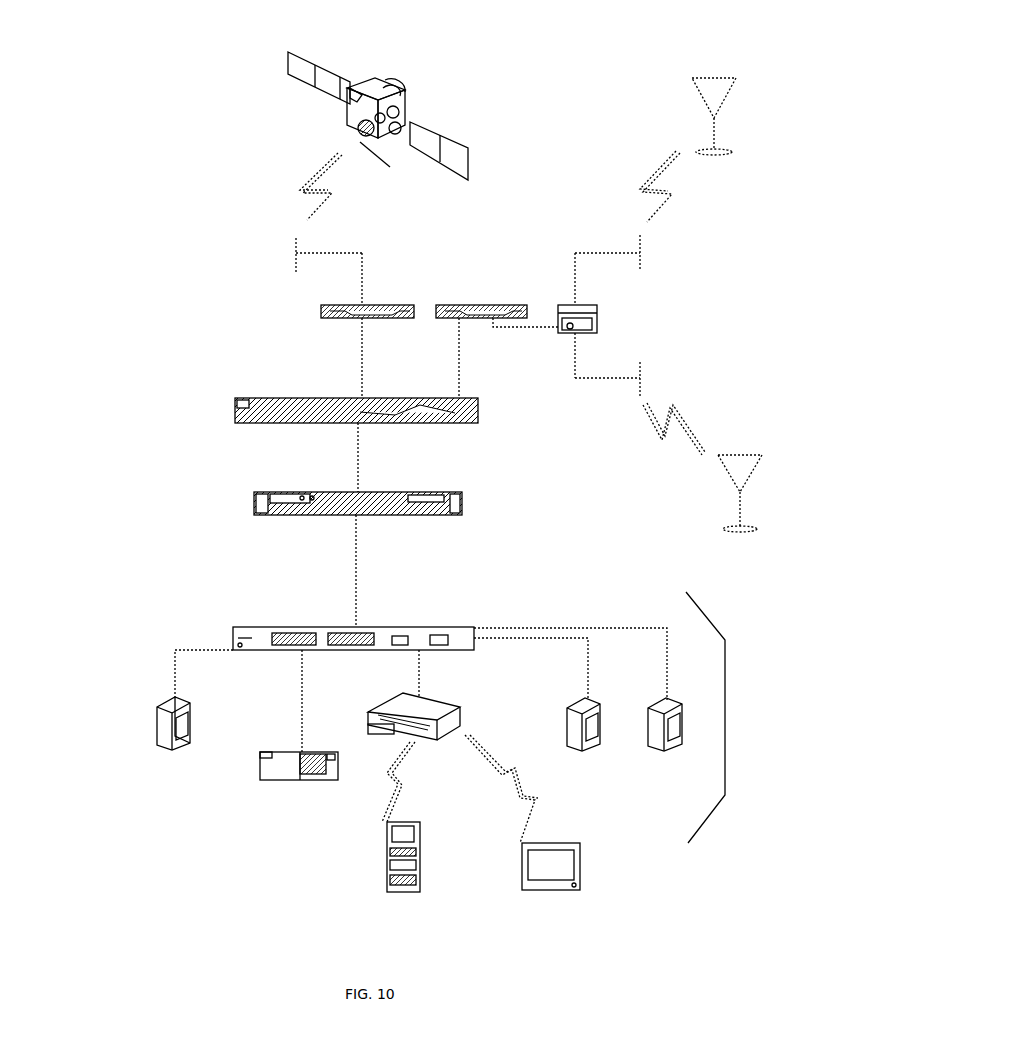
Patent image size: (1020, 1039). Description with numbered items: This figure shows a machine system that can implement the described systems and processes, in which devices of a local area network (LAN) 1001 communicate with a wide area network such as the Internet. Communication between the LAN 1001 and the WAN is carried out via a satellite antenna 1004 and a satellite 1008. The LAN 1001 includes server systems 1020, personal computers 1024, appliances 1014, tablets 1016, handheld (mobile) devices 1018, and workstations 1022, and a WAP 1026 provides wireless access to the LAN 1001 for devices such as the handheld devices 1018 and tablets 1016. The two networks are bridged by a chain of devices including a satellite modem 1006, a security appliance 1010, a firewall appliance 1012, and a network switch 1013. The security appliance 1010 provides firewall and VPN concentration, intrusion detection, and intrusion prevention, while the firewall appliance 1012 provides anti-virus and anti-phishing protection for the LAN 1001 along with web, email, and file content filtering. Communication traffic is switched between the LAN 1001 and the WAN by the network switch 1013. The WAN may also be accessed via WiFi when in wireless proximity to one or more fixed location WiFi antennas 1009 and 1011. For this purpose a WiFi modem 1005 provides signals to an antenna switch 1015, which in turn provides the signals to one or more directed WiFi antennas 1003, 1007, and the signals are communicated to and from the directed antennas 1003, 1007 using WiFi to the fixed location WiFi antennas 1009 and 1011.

The local area network (LAN) 1001 is at (739, 717).
The directed WiFi antenna 1003 is at (691, 257).
The satellite antenna 1004 is at (239, 271).
The WiFi modem 1005 is at (485, 327).
The satellite modem 1006 is at (269, 350).
The directed WiFi antenna 1007 is at (691, 384).
The satellite 1008 is at (381, 136).
The fixed location WiFi antenna 1009 is at (721, 123).
The security appliance 1010 is at (255, 445).
The fixed location WiFi antenna 1011 is at (671, 467).
The firewall appliance 1012 is at (256, 559).
The network switch 1013 is at (353, 610).
The appliance 1014 is at (305, 733).
The antenna switch 1015 is at (621, 315).
The tablet 1016 is at (580, 883).
The handheld (mobile) device 1018 is at (435, 874).
The server system 1020 is at (583, 719).
The workstation 1022 is at (544, 714).
The personal computer 1024 is at (183, 728).
The WAP 1026 is at (453, 746).